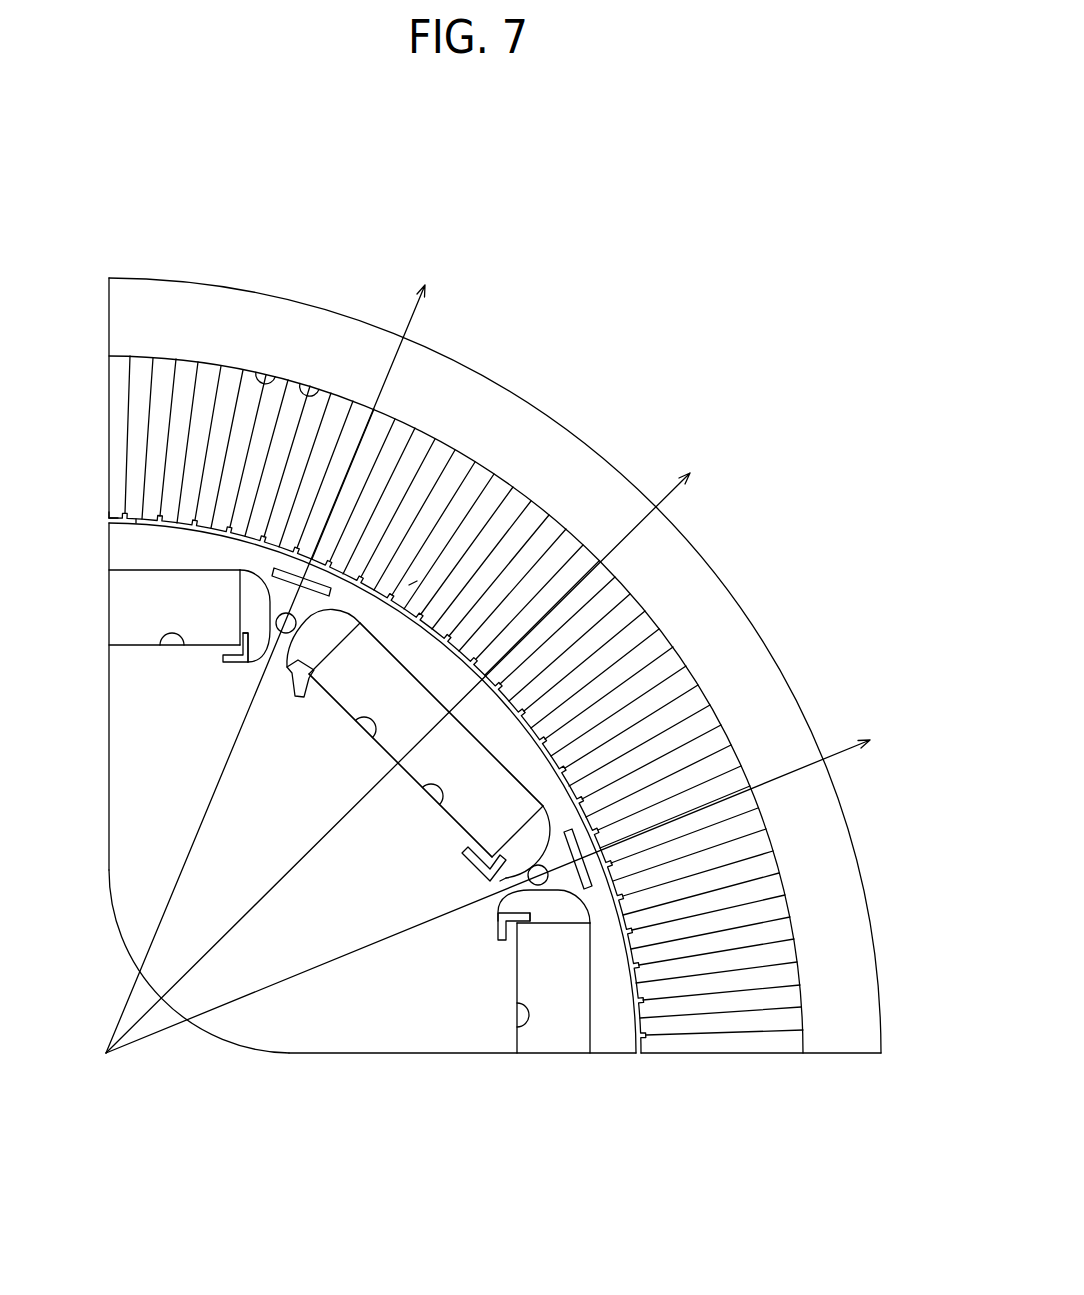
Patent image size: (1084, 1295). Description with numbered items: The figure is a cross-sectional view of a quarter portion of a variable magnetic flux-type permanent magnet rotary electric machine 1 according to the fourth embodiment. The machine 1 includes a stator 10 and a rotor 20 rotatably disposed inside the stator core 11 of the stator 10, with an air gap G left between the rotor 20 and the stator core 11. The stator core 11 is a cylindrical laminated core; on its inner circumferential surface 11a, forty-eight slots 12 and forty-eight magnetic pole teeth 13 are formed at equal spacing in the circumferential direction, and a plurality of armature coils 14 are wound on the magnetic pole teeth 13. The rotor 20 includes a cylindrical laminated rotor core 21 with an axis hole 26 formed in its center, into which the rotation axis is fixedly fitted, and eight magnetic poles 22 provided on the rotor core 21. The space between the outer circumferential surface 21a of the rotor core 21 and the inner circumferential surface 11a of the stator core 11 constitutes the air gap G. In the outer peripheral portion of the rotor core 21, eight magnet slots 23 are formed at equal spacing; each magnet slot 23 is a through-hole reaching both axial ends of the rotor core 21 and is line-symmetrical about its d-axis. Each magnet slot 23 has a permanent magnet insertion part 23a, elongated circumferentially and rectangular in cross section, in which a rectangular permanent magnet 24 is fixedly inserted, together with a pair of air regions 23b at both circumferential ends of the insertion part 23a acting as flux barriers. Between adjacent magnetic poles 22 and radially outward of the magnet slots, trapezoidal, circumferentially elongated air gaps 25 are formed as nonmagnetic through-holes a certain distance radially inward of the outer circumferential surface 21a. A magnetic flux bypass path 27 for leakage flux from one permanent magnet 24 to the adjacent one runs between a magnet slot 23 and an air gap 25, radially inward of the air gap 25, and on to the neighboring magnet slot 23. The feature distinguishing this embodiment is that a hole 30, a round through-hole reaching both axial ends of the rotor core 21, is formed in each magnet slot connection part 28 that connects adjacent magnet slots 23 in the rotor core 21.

The variable magnetic flux-type permanent magnet rotary electric machine 1 is at (390, 255).
The stator 10 is at (140, 277).
The stator core 11 is at (862, 1018).
The inner circumferential surface of the stator core 11a is at (108, 519).
The slots 12 is at (300, 392).
The magnetic pole teeth 13 is at (690, 718).
The armature coils 14 is at (768, 912).
The rotor 20 is at (615, 1057).
The rotor core 21 is at (460, 1032).
The outer circumferential surface of the rotor core 21a is at (108, 523).
The magnetic poles 22 is at (181, 562).
The magnet slots 23 is at (172, 650).
The permanent magnet insertion part 23a is at (356, 724).
The air regions 23b is at (252, 607).
The permanent magnet 24 is at (137, 645).
The air gaps 25 is at (374, 580).
The axis hole 26 is at (283, 1028).
The magnetic flux bypass path 27 is at (284, 594).
The magnet slot connection parts 28 is at (246, 664).
The hole 30 is at (413, 583).
The air gap G is at (140, 524).